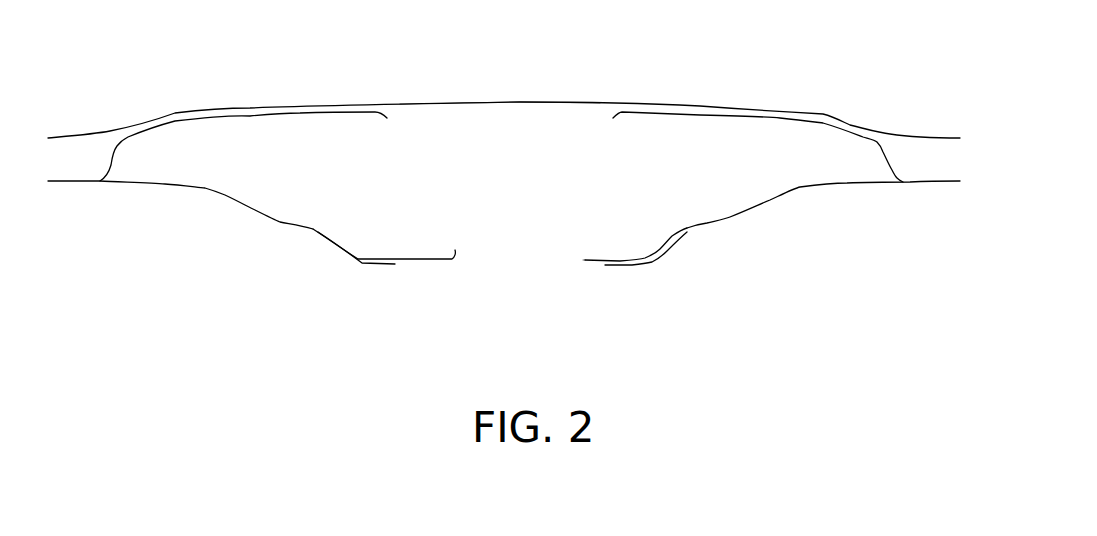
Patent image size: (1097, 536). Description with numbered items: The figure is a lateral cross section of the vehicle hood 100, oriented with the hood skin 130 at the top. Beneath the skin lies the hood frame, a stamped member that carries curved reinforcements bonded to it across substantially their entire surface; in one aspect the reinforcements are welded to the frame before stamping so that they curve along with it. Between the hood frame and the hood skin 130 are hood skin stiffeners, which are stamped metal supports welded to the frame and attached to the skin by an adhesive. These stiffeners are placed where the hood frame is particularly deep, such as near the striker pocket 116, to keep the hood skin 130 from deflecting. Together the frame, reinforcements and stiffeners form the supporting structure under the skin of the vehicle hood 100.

The vehicle hood 100 is at (145, 77).
The striker pocket 116 is at (583, 257).
The hood skin 130 is at (520, 102).